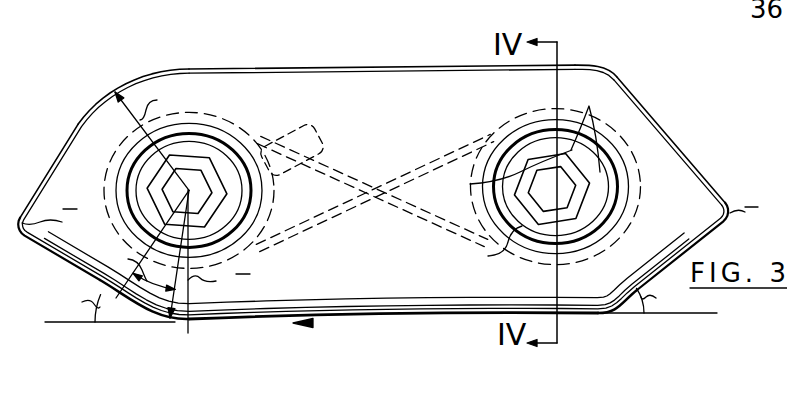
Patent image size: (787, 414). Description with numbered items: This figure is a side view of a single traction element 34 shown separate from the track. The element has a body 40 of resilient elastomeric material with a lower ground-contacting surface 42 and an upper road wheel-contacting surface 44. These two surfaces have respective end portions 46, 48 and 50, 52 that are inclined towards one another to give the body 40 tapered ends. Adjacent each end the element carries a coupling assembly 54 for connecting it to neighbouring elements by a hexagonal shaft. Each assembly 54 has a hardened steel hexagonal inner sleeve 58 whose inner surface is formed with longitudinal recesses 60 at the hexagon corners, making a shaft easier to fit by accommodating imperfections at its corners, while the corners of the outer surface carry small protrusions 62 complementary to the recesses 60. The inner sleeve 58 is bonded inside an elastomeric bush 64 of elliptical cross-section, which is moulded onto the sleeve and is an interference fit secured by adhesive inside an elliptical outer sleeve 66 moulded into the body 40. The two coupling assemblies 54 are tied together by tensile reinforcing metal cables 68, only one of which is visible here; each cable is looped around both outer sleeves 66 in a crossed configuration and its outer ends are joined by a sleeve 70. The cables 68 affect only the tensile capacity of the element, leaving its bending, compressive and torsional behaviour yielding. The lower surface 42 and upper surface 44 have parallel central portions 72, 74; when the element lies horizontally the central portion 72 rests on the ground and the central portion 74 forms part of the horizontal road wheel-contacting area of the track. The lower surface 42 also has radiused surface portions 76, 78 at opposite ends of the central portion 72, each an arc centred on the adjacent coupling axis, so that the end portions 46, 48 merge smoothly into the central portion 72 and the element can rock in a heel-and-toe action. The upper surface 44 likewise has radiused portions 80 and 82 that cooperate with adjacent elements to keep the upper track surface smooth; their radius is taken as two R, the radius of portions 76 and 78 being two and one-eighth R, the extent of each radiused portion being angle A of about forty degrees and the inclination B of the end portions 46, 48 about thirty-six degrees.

The traction element 34 is at (397, 188).
The body 40 is at (670, 147).
The lower ground-contacting surface 42 is at (322, 312).
The upper road wheel-contacting surface 44 is at (318, 71).
The end portion of lower surface 46 is at (72, 268).
The end portion of lower surface 48 is at (700, 246).
The end portion of upper surface 50 is at (92, 118).
The end portion of upper surface 52 is at (704, 173).
The coupling assembly 54 is at (252, 138).
The hexagonal inner sleeve 58 is at (572, 195).
The longitudinal recesses 60 is at (503, 175).
The protrusions 62 is at (590, 112).
The bush 64 is at (487, 250).
The elliptical outer sleeve 66 is at (525, 130).
The metal cables 68 is at (374, 192).
The sleeve 70 is at (320, 140).
The central portion of lower surface 72 is at (410, 317).
The central portion of upper surface 74 is at (363, 67).
The radiused surface portion 76 is at (135, 313).
The radiused surface portion 78 is at (599, 313).
The radiused surface portion 80 is at (128, 82).
The radiused surface portion 82 is at (617, 78).